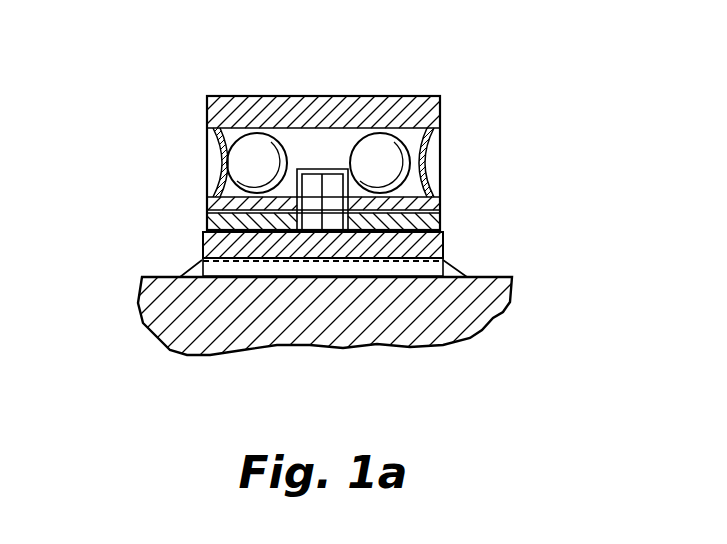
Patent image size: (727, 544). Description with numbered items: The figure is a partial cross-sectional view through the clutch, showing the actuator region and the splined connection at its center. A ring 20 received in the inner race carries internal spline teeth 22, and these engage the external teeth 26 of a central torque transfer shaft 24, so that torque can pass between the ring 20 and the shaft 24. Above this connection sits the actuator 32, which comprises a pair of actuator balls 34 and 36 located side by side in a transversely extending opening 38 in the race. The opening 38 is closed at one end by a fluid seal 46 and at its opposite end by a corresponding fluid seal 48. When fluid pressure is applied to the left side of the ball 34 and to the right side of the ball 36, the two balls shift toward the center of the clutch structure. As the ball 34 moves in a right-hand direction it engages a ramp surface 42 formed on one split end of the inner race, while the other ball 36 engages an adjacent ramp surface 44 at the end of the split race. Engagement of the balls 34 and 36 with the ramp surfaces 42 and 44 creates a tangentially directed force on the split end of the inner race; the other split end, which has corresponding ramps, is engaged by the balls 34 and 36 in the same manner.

The ring 20 is at (428, 245).
The internal spline teeth 22 is at (227, 267).
The central torque transfer shaft 24 is at (200, 292).
The teeth for the shaft 26 is at (447, 275).
The actuator 32 is at (185, 153).
The actuator ball 34 is at (247, 157).
The actuator ball 36 is at (383, 158).
The transversely extending opening 38 is at (290, 145).
The ramp surface 42 is at (312, 207).
The ramp surface 44 is at (335, 203).
The fluid seal 46 is at (212, 135).
The fluid seal 48 is at (438, 146).